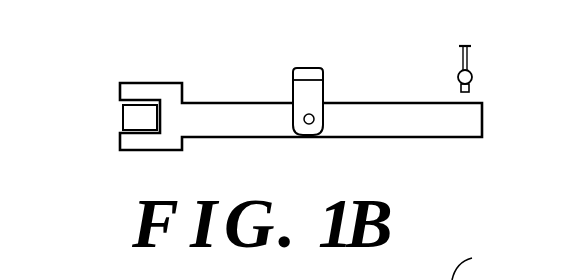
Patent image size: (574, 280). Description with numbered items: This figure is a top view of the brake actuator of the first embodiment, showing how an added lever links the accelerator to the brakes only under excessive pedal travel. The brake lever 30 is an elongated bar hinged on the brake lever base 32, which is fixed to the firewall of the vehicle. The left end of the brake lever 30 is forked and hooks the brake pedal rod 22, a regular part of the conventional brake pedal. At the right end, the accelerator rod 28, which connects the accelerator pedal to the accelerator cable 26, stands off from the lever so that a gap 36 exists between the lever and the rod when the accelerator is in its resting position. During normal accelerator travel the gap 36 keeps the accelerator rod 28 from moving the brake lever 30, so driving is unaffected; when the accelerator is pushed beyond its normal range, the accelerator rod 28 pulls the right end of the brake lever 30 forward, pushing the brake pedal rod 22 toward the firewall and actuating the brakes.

The brake pedal rod 22 is at (143, 113).
The accelerator cable 26 is at (462, 57).
The accelerator rod 28 is at (472, 74).
The brake lever 30 is at (231, 120).
The brake lever base 32 is at (306, 91).
The gap 36 is at (470, 92).